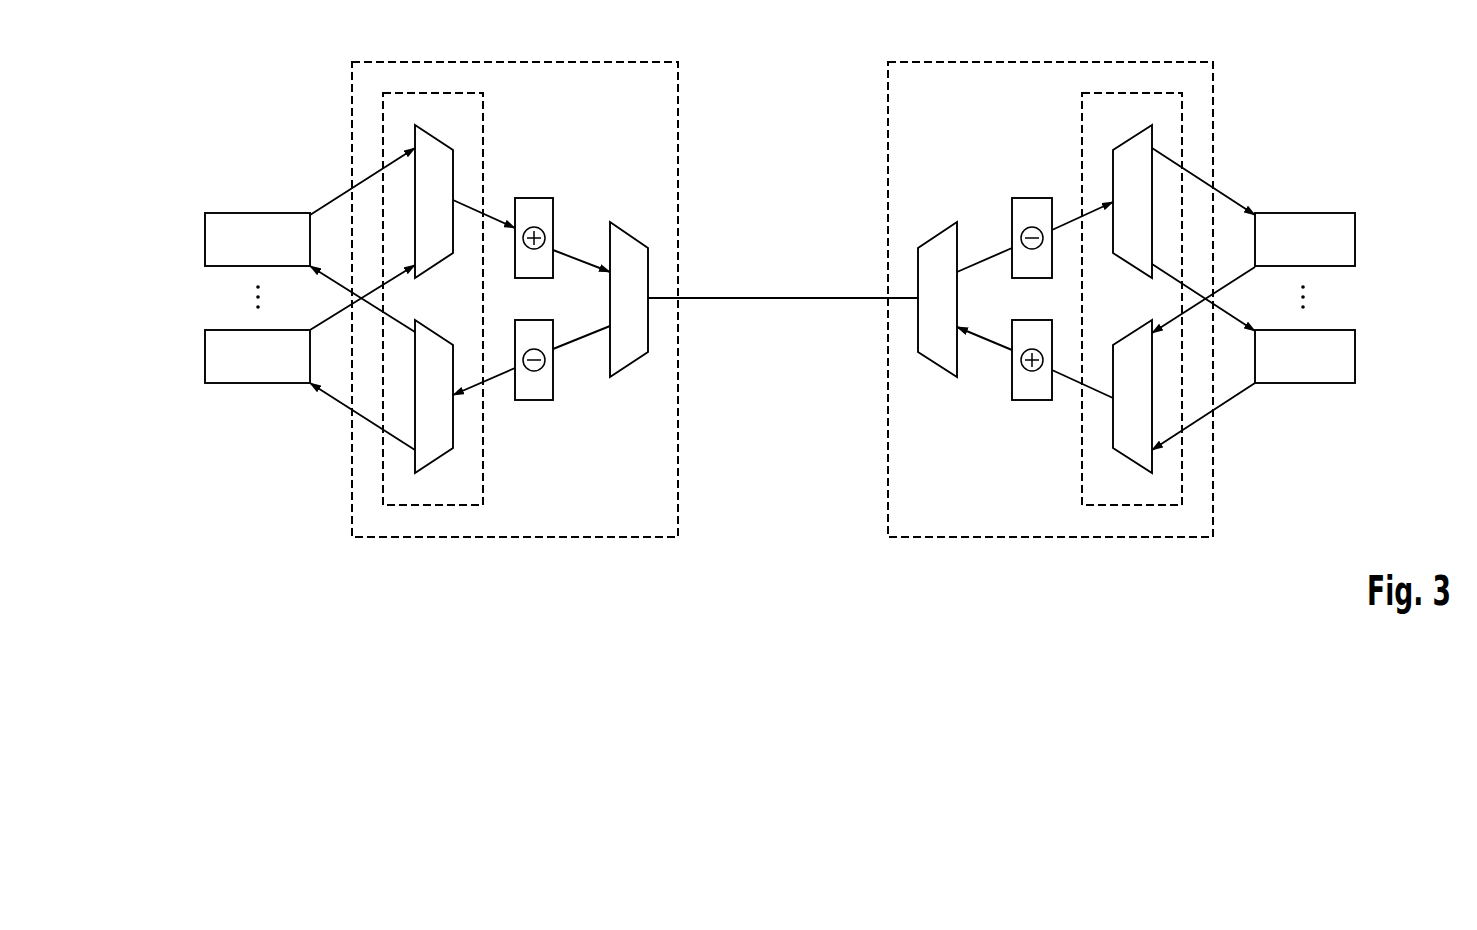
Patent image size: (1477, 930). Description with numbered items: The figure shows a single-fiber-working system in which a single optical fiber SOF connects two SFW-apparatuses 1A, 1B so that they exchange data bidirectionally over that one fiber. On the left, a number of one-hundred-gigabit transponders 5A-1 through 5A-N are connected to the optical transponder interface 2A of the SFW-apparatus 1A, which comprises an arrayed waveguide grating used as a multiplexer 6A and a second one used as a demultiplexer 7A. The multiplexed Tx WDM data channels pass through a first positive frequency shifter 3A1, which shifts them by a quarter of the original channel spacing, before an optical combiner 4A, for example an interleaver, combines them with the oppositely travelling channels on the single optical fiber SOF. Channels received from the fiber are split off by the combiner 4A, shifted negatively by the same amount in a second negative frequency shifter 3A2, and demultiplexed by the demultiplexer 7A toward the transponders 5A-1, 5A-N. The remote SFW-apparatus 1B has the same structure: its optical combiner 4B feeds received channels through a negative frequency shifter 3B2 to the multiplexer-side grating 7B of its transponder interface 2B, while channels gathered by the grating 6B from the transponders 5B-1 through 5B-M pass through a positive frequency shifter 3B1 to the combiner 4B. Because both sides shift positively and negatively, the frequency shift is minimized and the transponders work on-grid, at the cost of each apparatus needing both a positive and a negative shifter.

The SFW-apparatus 1A is at (678, 115).
The SFW-apparatus 1B is at (888, 115).
The optical transponder interface 2A is at (472, 93).
The optical transponder interface 2B is at (1095, 93).
The positive frequency shifter 3A1 is at (538, 198).
The negative frequency shifter 3A2 is at (538, 400).
The positive frequency shifter 3B1 is at (1032, 400).
The negative frequency shifter 3B2 is at (1032, 198).
The optical combiner 4A is at (648, 265).
The optical combiner 4B is at (918, 266).
The transponder 5A-N is at (205, 240).
The transponder 5A-1 is at (205, 352).
The transponder 5B-M is at (1355, 240).
The transponder 5B-1 is at (1355, 348).
The AWG multiplexer 6A is at (433, 137).
The AWG multiplexer 6B is at (1131, 458).
The AWG demultiplexer 7A is at (435, 457).
The AWG demultiplexer 7B is at (1133, 136).
The single optical fiber SOF is at (770, 298).